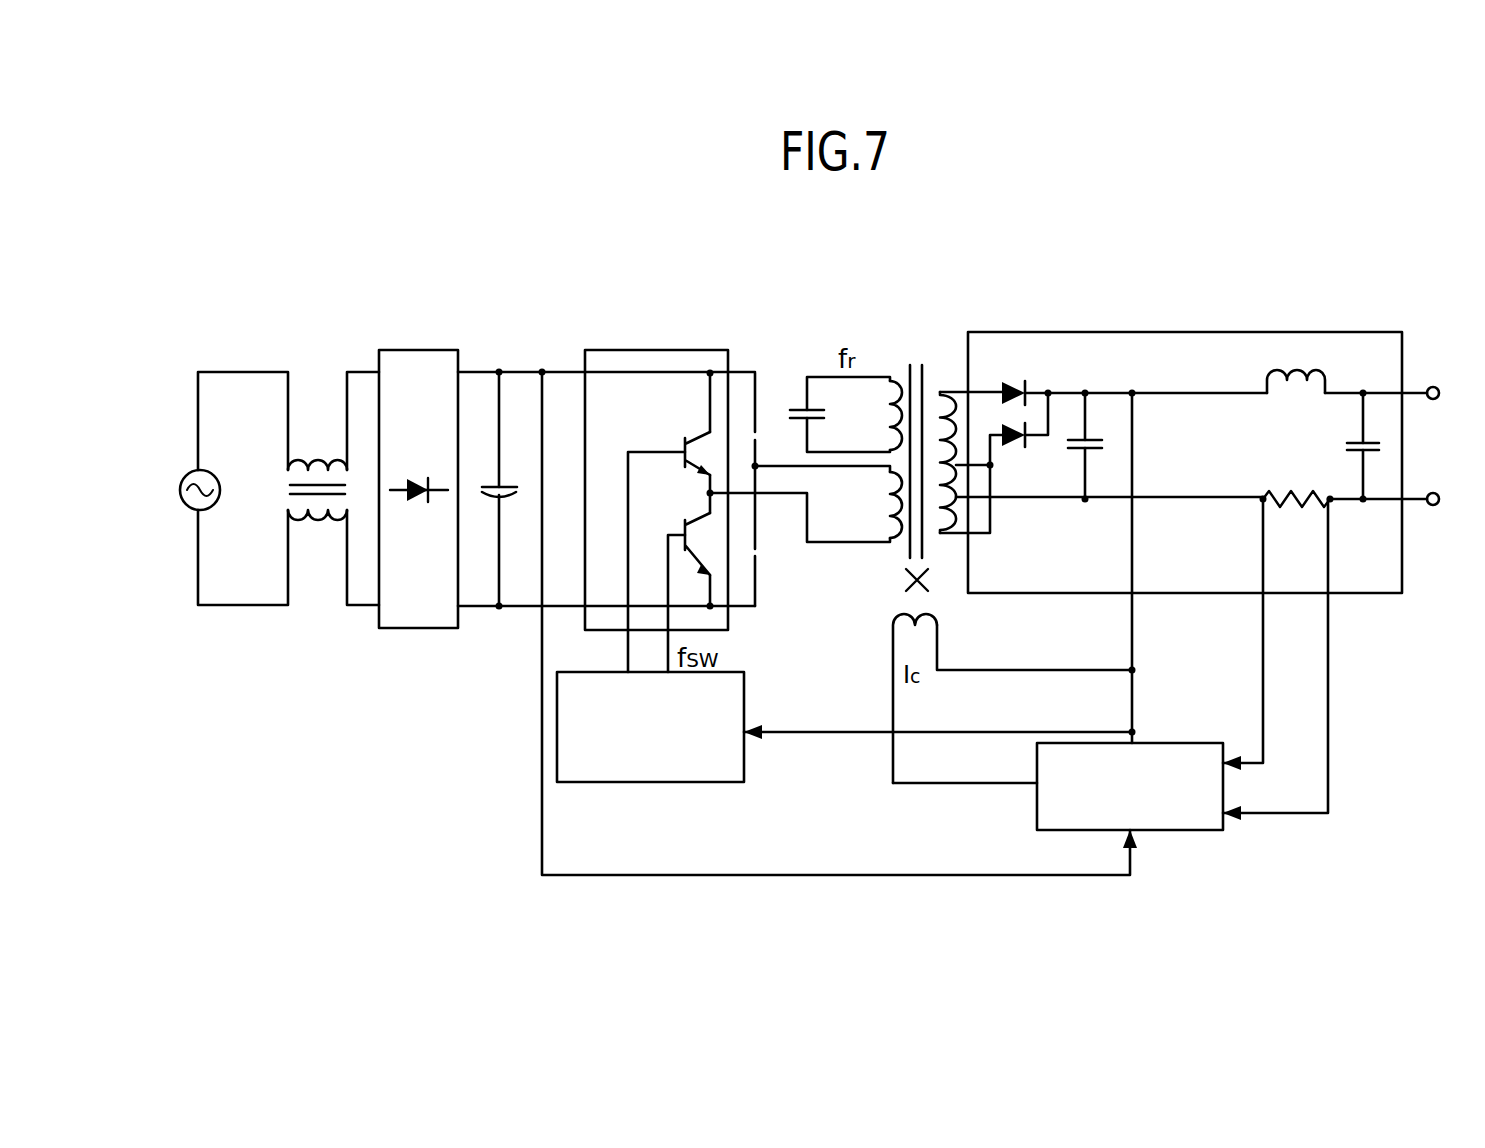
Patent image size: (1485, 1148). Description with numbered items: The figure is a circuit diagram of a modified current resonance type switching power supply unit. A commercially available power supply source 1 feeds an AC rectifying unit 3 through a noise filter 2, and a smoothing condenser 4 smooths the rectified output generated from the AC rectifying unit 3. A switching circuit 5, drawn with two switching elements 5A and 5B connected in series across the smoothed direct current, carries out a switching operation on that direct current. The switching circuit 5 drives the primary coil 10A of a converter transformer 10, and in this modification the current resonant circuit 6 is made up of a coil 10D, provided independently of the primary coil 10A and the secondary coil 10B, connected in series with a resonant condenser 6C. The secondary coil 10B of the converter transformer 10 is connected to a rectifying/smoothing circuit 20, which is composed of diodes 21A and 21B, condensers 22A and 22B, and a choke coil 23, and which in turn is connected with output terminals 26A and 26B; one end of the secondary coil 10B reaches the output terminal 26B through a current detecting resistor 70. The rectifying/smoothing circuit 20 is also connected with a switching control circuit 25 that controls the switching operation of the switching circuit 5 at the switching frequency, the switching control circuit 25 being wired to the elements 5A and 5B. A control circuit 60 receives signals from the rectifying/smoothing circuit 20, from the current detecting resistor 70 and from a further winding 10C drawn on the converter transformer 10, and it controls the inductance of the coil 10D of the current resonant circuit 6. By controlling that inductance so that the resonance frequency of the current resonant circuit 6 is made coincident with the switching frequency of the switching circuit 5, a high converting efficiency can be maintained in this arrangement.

The commercially available power supply source 1 is at (215, 477).
The noise filter 2 is at (317, 522).
The AC rectifying unit 3 is at (419, 628).
The smoothing condenser 4 is at (492, 482).
The switching circuit 5 is at (655, 350).
The switching element (transistor) 5A is at (684, 444).
The switching element (transistor) 5B is at (684, 527).
The current resonant circuit 6 is at (785, 262).
The resonant condenser 6C is at (805, 405).
The converter transformer 10 is at (917, 367).
The primary coil 10A is at (888, 528).
The secondary coil 10B is at (945, 535).
The current detection winding 10C is at (893, 633).
The coil 10D is at (893, 385).
The rectifying/smoothing circuit 20 is at (1188, 332).
The diode 21A is at (1010, 390).
The diode 21B is at (1012, 447).
The condenser 22A is at (1093, 450).
The condenser 22B is at (1355, 446).
The choke coil 23 is at (1325, 384).
The switching control circuit 25 is at (648, 782).
The output terminal 26A is at (1435, 388).
The output terminal 26B is at (1435, 494).
The control circuit 60 is at (1178, 831).
The current detecting resistor 70 is at (1300, 508).